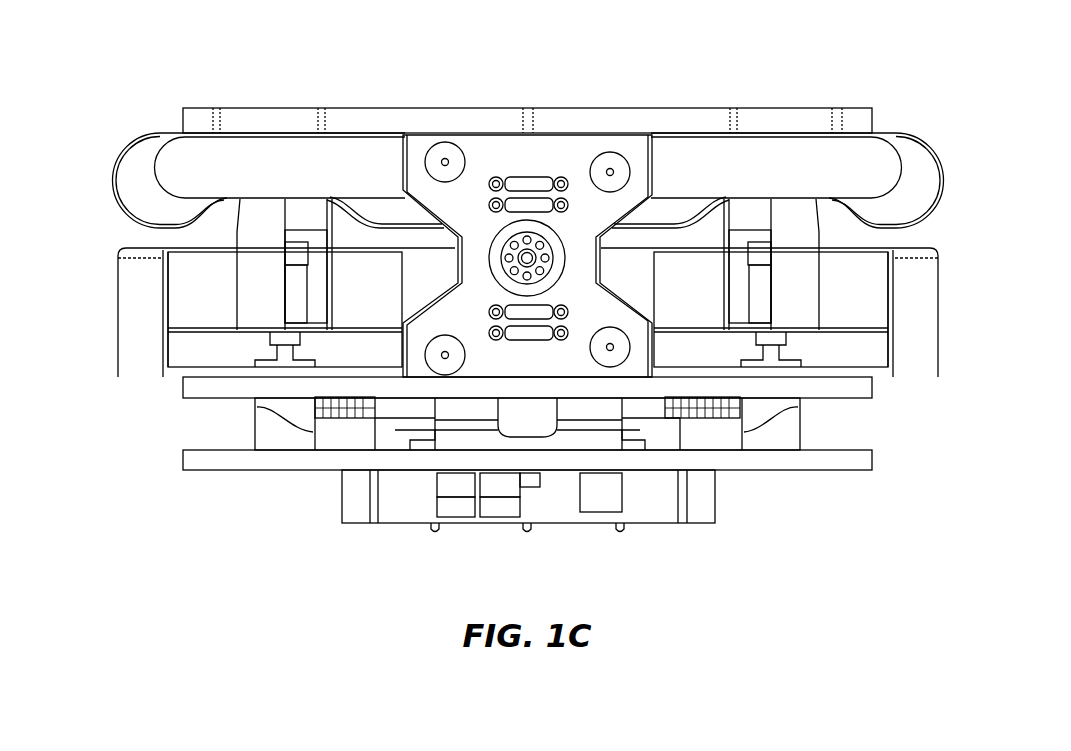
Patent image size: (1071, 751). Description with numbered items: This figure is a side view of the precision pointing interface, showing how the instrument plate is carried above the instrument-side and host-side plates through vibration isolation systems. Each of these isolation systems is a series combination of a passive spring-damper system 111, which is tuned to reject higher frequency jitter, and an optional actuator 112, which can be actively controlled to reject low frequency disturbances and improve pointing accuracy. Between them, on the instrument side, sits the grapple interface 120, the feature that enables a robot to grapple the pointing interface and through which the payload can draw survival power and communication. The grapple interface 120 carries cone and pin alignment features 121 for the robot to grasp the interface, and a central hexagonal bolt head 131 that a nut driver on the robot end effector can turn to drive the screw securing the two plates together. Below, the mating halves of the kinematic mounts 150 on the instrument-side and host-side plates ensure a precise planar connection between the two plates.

The passive spring-damper system 111 is at (912, 157).
The actuator 112 is at (297, 287).
The grapple interface 120 is at (555, 157).
The cone and pin alignment features 121 is at (444, 356).
The hexagonal bolt head 131 is at (503, 246).
The kinematic mounts 150 is at (522, 420).